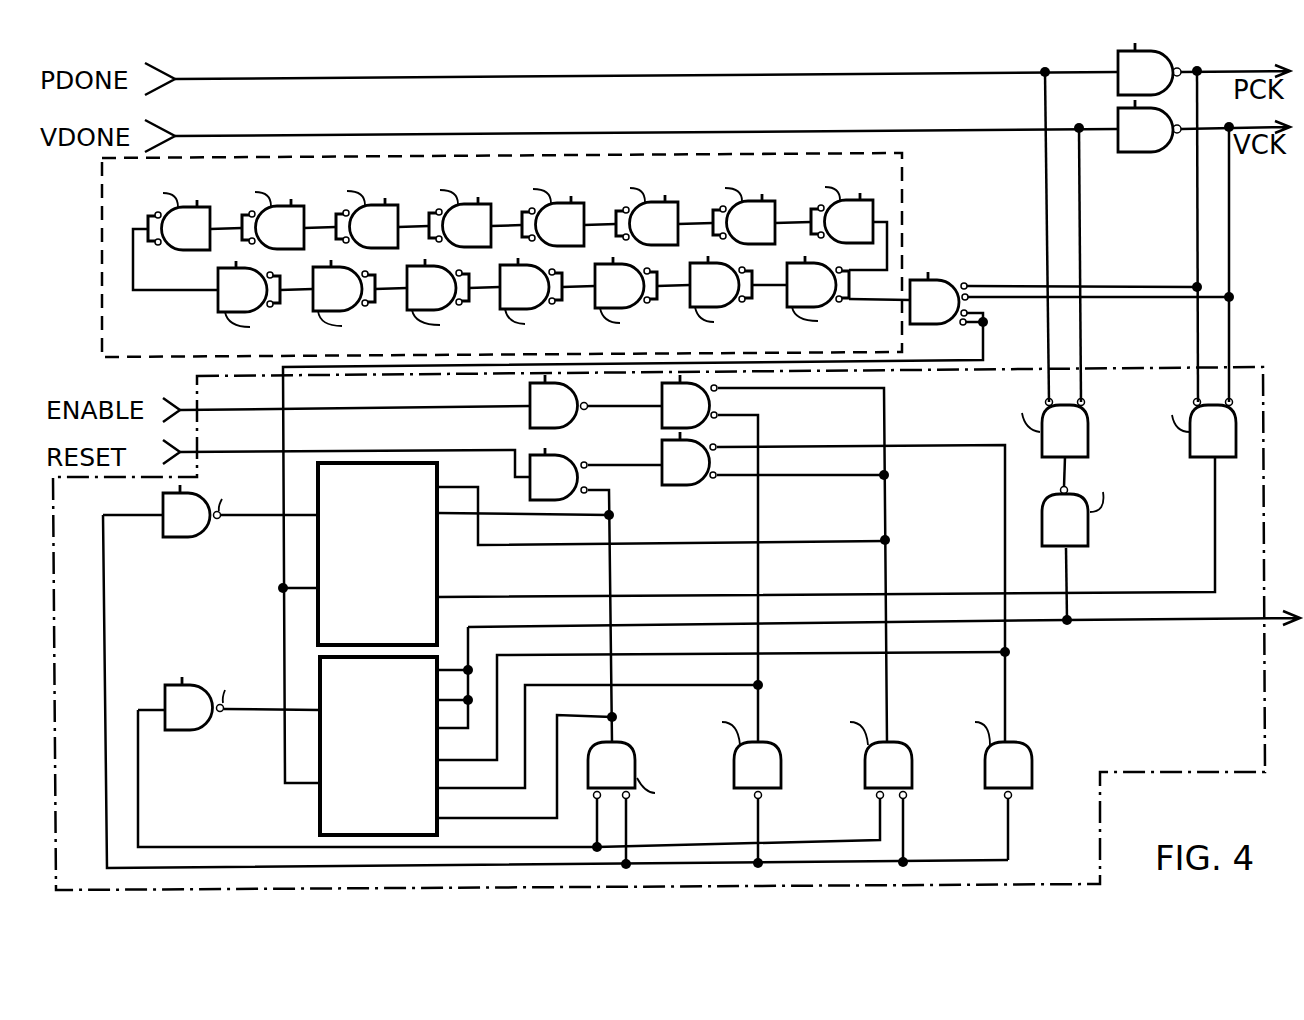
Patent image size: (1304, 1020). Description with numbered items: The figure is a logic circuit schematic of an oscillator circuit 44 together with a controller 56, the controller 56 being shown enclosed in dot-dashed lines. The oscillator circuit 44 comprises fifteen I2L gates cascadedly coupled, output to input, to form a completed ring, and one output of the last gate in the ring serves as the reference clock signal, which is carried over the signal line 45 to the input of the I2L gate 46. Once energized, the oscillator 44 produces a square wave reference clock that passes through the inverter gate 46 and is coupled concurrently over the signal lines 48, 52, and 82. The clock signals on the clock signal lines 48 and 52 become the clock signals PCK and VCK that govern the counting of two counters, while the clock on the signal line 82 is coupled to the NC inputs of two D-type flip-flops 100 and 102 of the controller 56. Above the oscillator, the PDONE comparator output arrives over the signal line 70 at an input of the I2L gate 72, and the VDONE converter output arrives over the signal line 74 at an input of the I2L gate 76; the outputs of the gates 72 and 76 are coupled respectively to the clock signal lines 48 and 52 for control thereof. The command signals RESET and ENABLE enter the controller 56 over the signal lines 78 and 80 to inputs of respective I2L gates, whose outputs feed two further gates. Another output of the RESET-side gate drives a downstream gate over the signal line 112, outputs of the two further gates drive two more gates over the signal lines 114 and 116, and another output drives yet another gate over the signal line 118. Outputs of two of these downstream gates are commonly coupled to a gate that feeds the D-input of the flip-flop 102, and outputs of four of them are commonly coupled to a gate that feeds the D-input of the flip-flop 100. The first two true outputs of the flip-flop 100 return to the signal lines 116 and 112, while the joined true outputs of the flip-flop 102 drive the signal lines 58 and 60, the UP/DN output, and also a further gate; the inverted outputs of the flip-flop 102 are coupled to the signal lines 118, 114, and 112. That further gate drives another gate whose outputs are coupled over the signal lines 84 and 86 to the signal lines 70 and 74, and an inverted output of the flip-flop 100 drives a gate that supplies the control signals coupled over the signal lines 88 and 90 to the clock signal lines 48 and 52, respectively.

The signal line 70 is at (742, 72).
The signal line 74 is at (882, 128).
The I2L gate 72 is at (1119, 88).
The I2L gate 76 is at (1133, 153).
The signal line 84 is at (1044, 200).
The signal line 86 is at (1082, 218).
The signal line 88 is at (1194, 240).
The signal line 90 is at (1231, 350).
The oscillator circuit 44 is at (887, 177).
The signal line 45 is at (873, 302).
The I2L gate 46 is at (938, 280).
The clock signal line 48 is at (1097, 285).
The clock signal line 52 is at (1098, 298).
The controller 56 is at (1192, 746).
The signal line 80 is at (305, 410).
The signal line 78 is at (303, 452).
The signal line 82 is at (282, 627).
The D-type flip-flop 100 is at (440, 552).
The D-type flip-flop 102 is at (318, 828).
The signal line 112 is at (612, 587).
The signal line 114 is at (760, 587).
The signal line 116 is at (895, 578).
The signal line 118 is at (1004, 512).
The signal line 58 is at (884, 639).
The signal line 60 is at (1113, 624).